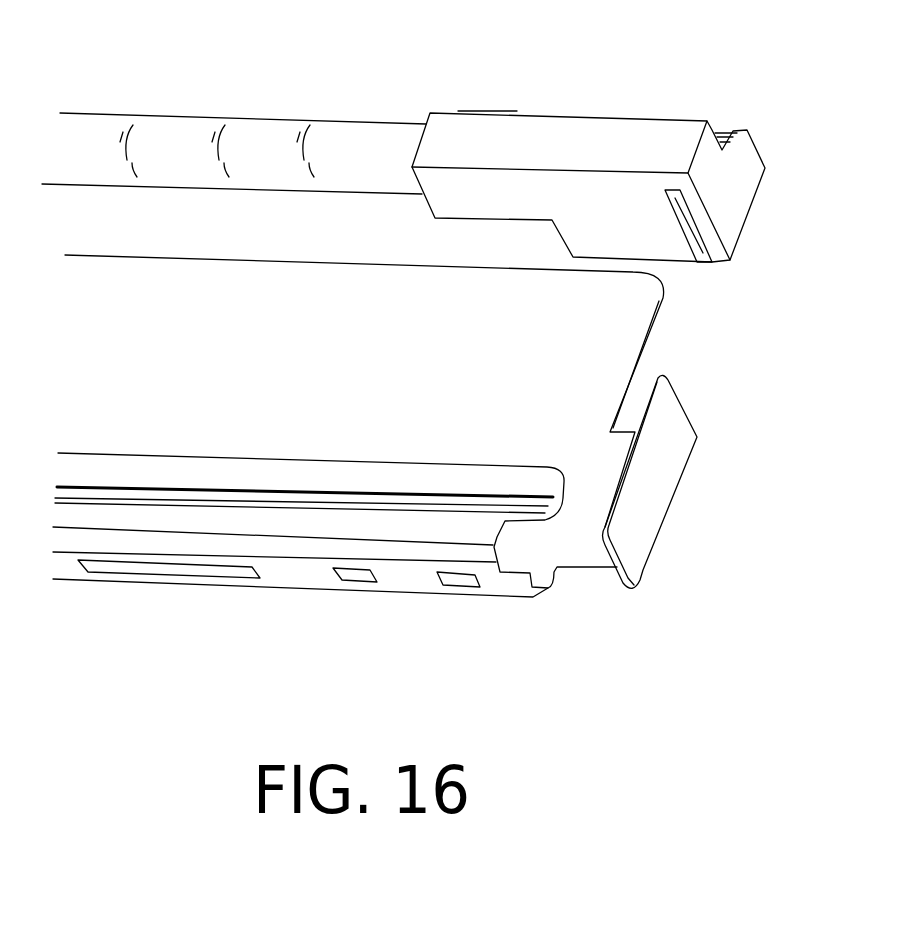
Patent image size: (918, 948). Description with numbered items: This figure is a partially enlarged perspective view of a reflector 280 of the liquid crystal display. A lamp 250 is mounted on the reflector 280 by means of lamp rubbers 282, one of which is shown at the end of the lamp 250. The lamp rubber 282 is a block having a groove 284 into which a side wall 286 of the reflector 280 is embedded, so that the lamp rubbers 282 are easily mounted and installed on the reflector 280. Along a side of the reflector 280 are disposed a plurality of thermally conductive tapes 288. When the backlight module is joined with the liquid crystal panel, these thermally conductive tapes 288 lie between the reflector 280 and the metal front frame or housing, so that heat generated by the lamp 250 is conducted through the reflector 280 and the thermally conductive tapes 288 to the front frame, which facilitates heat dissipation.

The lamp 250 is at (358, 138).
The reflector 280 is at (403, 577).
The lamp rubber 282 is at (648, 137).
The groove 284 is at (683, 213).
The side wall 286 is at (665, 423).
The thermally conductive tape 288 is at (352, 577).